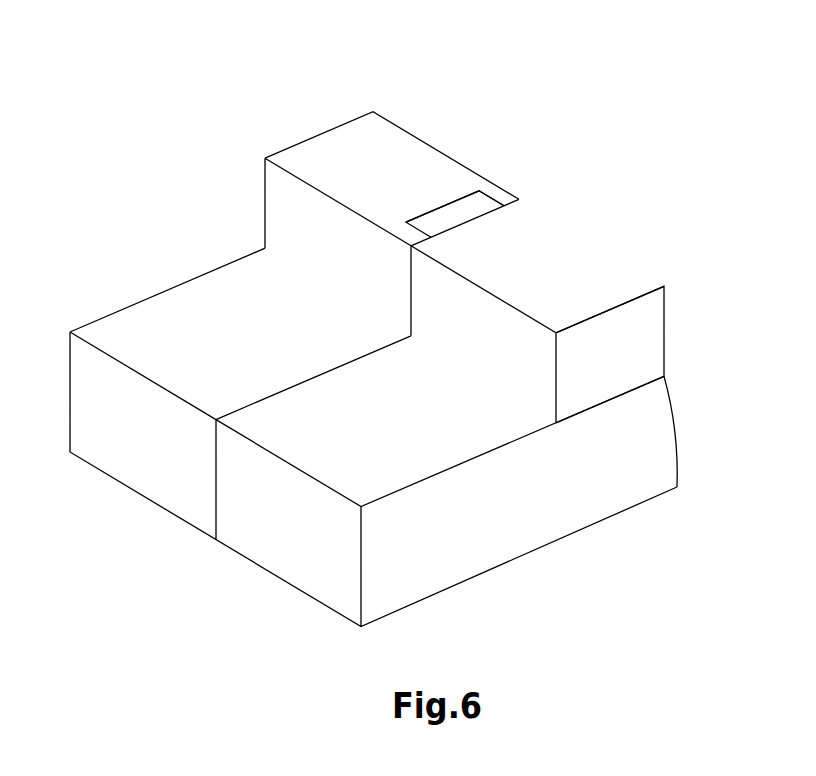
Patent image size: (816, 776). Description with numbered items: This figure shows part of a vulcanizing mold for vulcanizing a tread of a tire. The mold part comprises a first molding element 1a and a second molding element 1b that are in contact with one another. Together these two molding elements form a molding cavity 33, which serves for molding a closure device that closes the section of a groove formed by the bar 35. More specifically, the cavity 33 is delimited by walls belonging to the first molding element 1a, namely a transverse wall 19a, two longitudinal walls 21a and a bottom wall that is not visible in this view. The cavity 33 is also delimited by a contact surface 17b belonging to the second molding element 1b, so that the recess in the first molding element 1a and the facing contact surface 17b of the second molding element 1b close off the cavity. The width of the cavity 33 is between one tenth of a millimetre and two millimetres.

The first molding element 1a is at (328, 154).
The second molding element 1b is at (586, 268).
The contact surface 17b is at (474, 216).
The transverse wall 19a is at (438, 204).
The longitudinal walls 21a is at (486, 194).
The molding cavity 33 is at (464, 228).
The bar 35 is at (629, 372).